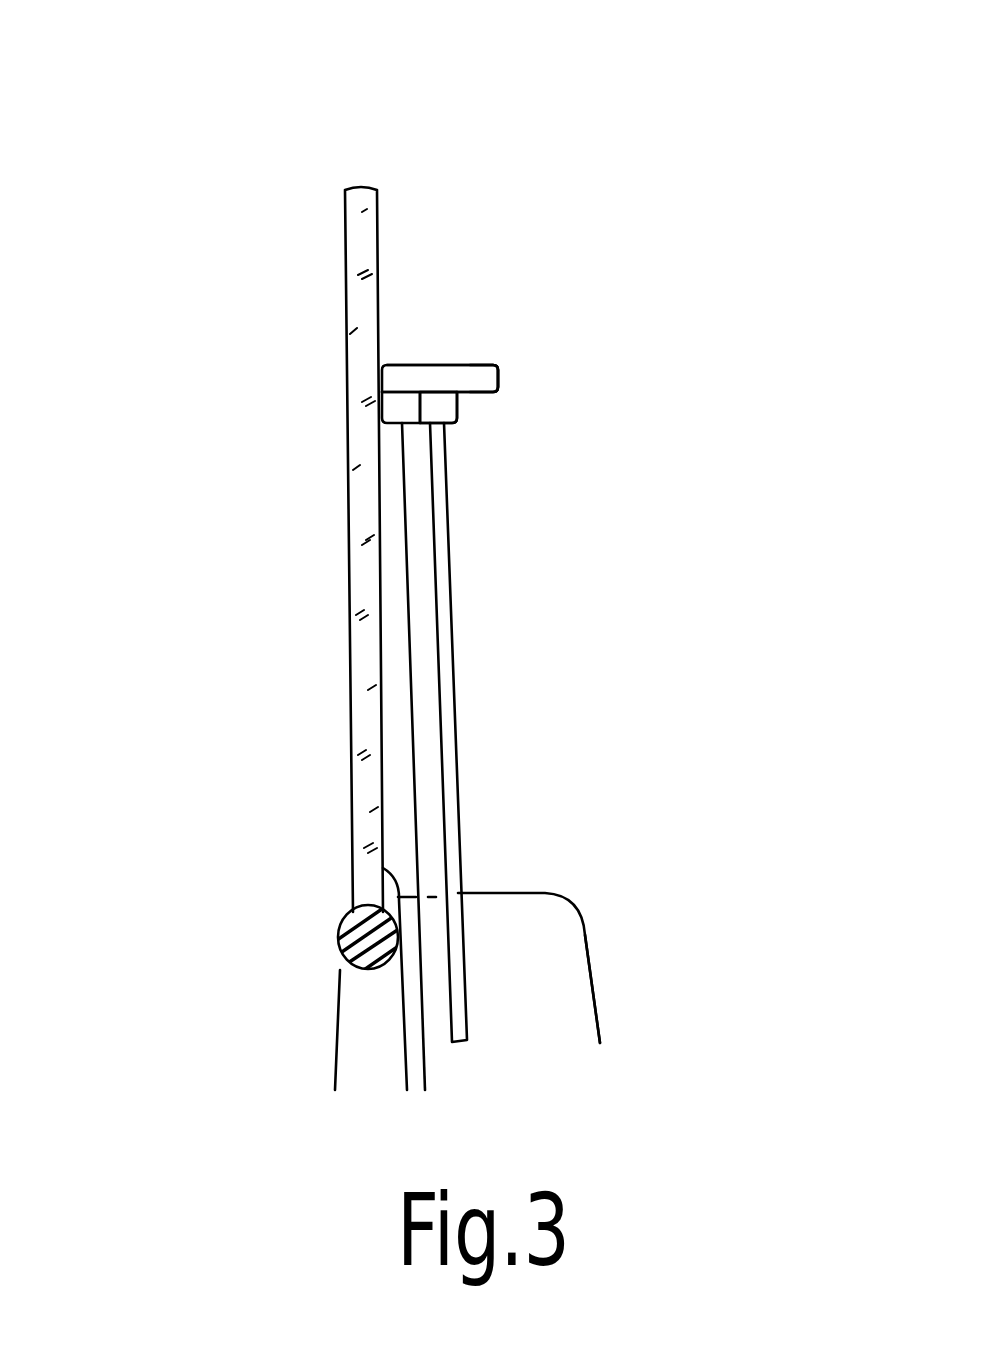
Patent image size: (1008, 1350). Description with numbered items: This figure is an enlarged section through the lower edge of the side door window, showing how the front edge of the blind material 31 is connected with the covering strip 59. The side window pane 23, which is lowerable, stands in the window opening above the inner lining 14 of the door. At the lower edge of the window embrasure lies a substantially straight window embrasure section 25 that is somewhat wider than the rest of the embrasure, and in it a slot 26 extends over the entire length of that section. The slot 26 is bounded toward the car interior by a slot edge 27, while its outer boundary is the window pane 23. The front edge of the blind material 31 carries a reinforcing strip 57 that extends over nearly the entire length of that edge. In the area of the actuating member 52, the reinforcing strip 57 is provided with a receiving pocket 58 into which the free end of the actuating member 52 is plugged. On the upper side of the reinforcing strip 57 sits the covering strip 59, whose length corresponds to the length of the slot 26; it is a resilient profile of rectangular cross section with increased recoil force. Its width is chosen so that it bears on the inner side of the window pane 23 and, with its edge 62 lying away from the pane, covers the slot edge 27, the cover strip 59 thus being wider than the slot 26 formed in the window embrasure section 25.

The side window pane 23 is at (350, 283).
The reinforcing strip 57 is at (399, 407).
The covering strip 59 is at (490, 360).
The edge of cover strip 62 is at (500, 377).
The receiving pockets 58 is at (440, 407).
The blind material 31 is at (407, 568).
The actuating member 52 is at (447, 655).
The slot edge 27 is at (473, 913).
The window embrasure section 25 is at (537, 892).
The slot 26 is at (383, 868).
The inner lining 14 is at (593, 997).